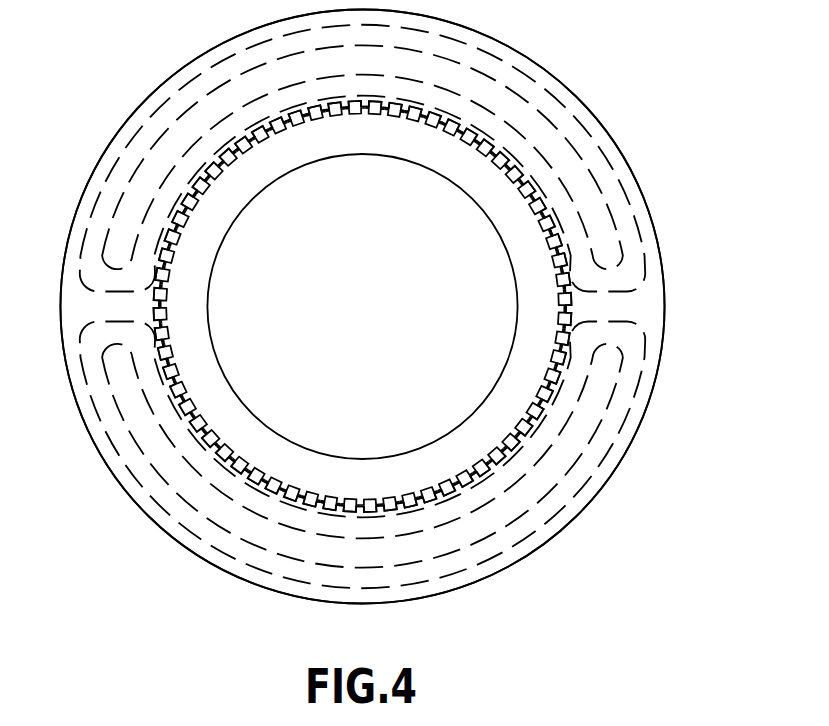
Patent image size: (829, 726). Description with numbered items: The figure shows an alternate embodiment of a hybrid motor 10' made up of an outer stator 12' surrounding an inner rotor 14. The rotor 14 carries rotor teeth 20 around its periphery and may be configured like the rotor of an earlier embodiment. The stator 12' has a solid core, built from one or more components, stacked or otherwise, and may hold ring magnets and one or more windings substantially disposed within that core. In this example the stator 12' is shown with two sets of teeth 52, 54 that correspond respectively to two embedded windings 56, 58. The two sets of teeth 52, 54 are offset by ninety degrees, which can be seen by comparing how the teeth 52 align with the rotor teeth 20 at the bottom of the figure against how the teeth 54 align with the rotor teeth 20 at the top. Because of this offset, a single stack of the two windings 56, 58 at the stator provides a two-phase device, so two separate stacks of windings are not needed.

The hybrid motor 10' is at (405, 307).
The stator 12' is at (398, 307).
The rotor 14 is at (457, 445).
The rotor teeth 20 is at (258, 138).
The first set of stator teeth 52 is at (548, 388).
The second set of stator teeth 54 is at (262, 130).
The first embedded winding 56 is at (633, 365).
The second embedded winding 58 is at (633, 213).